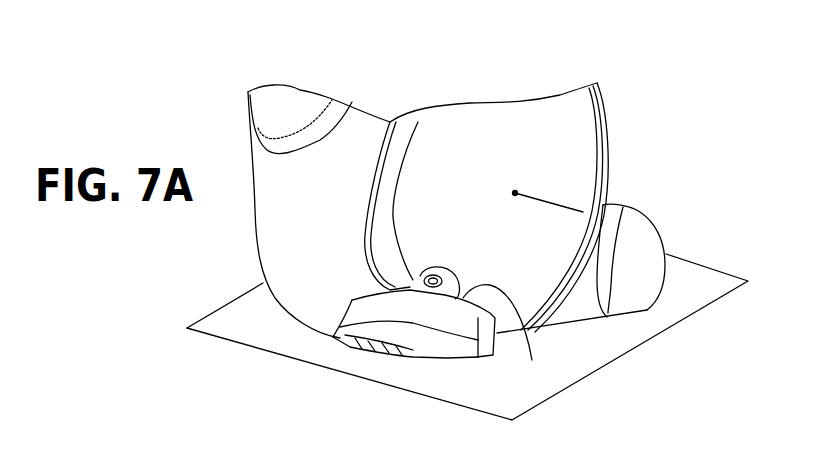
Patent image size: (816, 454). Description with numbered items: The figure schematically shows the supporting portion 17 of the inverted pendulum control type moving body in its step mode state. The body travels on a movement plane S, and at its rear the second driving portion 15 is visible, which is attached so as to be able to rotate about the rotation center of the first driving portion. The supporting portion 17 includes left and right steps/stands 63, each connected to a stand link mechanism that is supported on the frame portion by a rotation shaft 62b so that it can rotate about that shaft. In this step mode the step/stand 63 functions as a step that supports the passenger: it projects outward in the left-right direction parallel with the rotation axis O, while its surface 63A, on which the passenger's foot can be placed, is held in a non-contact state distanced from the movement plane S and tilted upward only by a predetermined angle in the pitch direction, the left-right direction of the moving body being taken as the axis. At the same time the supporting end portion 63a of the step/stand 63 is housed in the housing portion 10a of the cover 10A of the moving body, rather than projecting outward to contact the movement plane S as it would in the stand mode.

The movement plane S is at (215, 330).
The supporting portion 17 is at (572, 347).
The rotation shaft 62b is at (436, 271).
The rotation axis O is at (553, 206).
The second driving portion 15 is at (655, 228).
The cover 10A is at (298, 300).
The housing portion 10a is at (333, 328).
The step/stand 63 is at (430, 295).
The supporting end portion 63a is at (345, 347).
The surface 63A is at (532, 360).